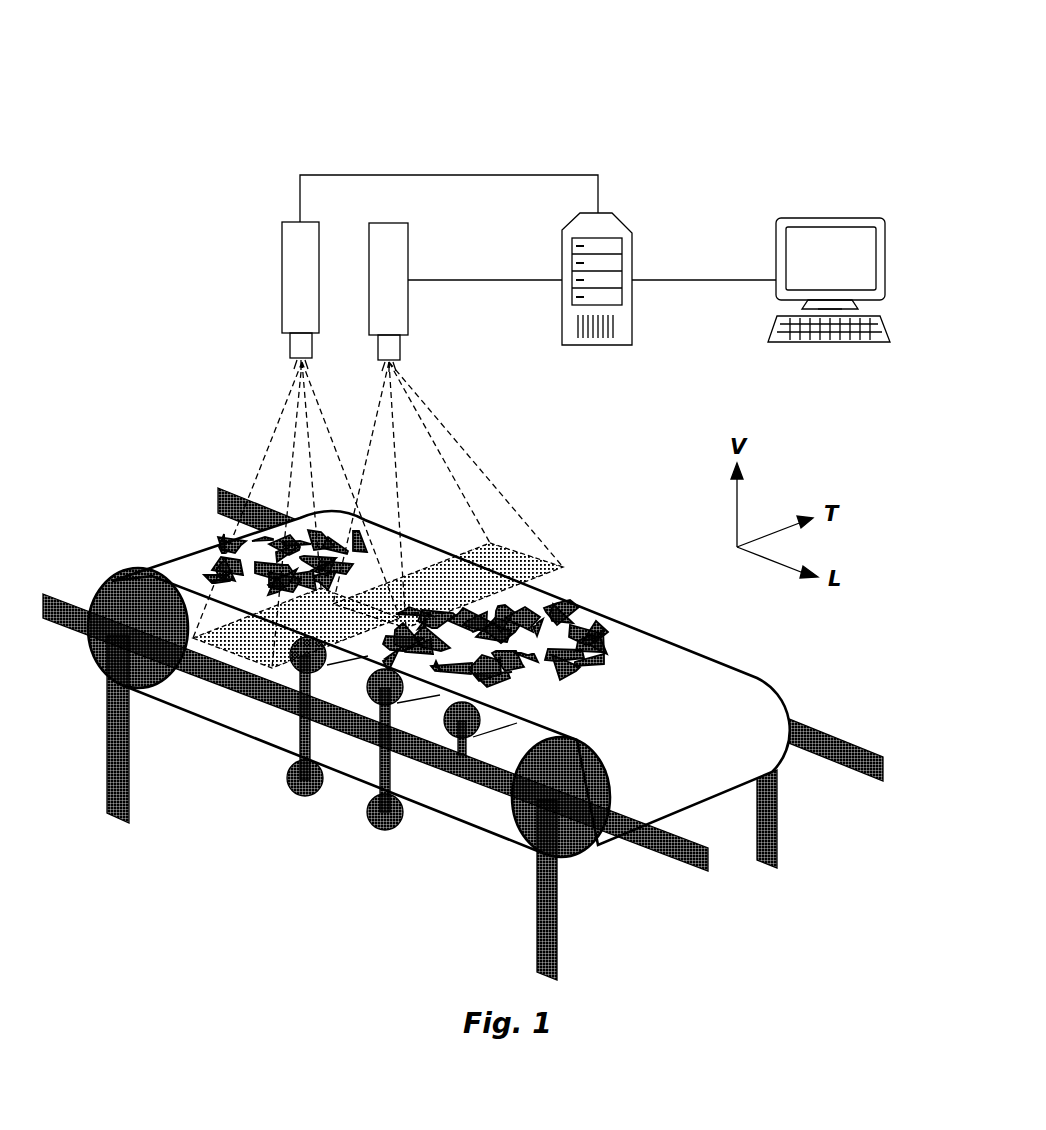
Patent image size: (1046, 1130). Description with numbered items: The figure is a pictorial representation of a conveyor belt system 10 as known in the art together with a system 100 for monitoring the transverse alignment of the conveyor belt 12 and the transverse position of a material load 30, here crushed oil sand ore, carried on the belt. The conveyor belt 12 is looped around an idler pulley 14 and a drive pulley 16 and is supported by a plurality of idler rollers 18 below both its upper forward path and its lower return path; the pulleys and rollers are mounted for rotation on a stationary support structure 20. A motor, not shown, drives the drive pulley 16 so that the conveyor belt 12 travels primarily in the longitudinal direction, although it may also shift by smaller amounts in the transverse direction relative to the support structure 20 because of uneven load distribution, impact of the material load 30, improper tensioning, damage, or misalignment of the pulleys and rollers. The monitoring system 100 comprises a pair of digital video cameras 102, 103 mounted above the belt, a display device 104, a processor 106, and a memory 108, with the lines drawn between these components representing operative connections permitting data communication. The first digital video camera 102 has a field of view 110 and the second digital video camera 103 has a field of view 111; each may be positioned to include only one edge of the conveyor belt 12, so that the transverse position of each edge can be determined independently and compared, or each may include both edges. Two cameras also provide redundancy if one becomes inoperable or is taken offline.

The system 100 is at (329, 76).
The conveyor belt system 10 is at (463, 680).
The conveyor belt 12 is at (690, 660).
The idler pulley 14 is at (100, 582).
The drive pulley 16 is at (608, 776).
The idler rollers 18 is at (304, 796).
The stationary support structure 20 is at (852, 748).
The material load 30 is at (612, 632).
The digital video camera 102 is at (282, 242).
The second digital video camera 103 is at (408, 241).
The display device 104 is at (885, 235).
The processor 106 is at (661, 279).
The memory 108 is at (632, 235).
The field of view 110 is at (250, 666).
The field of view 111 is at (536, 563).